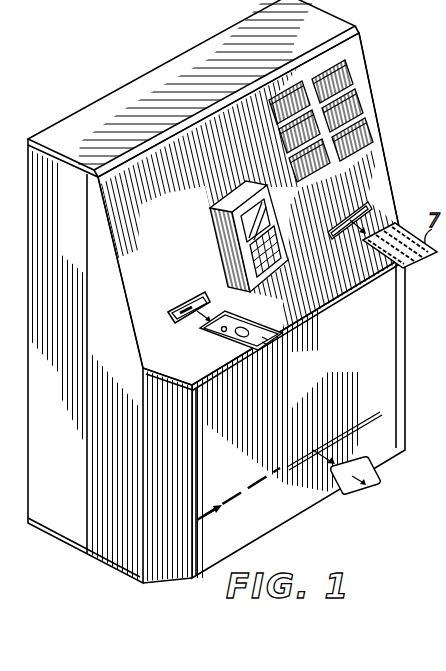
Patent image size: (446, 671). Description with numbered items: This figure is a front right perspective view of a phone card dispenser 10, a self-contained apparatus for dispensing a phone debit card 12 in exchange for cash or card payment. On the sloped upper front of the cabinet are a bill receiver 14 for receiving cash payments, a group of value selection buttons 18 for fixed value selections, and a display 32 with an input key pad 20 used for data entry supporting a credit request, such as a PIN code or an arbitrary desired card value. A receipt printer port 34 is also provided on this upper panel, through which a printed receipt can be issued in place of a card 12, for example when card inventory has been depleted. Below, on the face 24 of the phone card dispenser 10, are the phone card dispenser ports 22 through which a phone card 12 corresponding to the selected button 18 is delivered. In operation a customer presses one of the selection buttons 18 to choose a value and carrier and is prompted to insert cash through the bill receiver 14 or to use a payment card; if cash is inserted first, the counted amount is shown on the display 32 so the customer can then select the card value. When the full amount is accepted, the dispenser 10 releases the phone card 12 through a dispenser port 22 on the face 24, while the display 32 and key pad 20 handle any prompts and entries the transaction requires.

The phone card dispenser 10 is at (138, 52).
The phone debit card 12 is at (353, 490).
The bill receiver 14 is at (190, 297).
The value selection buttons 18 is at (357, 112).
The input key pad 20 is at (289, 250).
The phone card dispenser port 22 is at (346, 432).
The face 24 is at (144, 300).
The display 32 is at (208, 226).
The receipt printer port 34 is at (372, 205).